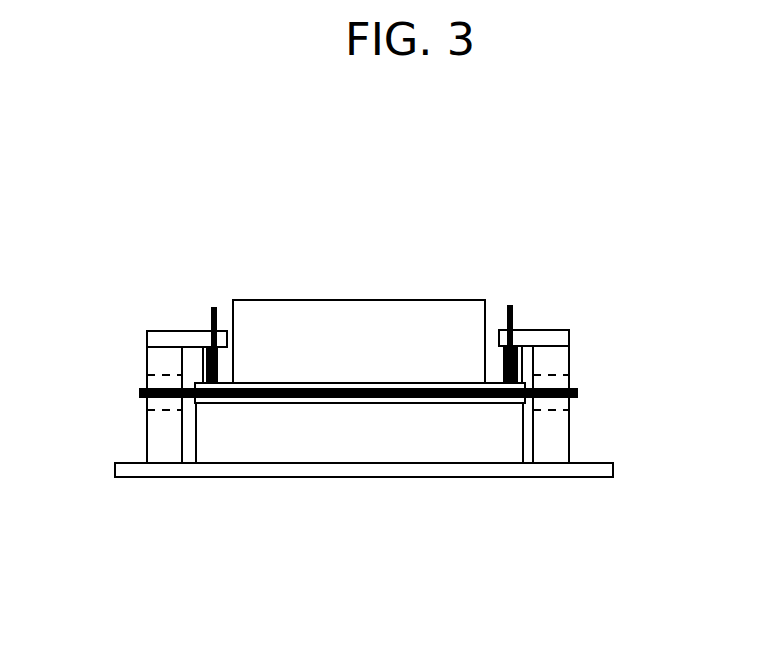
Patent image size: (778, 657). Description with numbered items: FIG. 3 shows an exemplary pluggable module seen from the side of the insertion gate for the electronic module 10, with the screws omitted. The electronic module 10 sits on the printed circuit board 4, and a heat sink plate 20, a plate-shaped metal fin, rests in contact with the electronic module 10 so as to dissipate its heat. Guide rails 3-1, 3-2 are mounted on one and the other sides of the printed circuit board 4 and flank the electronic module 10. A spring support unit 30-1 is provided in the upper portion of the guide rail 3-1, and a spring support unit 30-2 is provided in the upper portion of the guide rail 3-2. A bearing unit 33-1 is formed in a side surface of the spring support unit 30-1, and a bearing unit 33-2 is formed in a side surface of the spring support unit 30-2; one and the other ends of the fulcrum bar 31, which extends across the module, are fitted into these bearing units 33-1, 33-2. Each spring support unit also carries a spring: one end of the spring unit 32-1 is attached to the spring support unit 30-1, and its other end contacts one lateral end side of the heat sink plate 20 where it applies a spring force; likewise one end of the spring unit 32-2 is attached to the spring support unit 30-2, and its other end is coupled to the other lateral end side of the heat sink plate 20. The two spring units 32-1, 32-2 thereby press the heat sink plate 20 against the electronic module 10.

The guide rail 3-1 is at (570, 431).
The guide rail 3-2 is at (147, 428).
The printed circuit board 4 is at (597, 478).
The electronic module 10 is at (388, 452).
The heat sink plate 20 is at (305, 300).
The spring support unit 30-1 is at (557, 330).
The spring support unit 30-2 is at (170, 331).
The fulcrum bar 31 is at (577, 393).
The spring unit 32-1 is at (510, 305).
The spring unit 32-2 is at (214, 307).
The bearing unit 33-1 is at (570, 382).
The bearing unit 33-2 is at (147, 380).